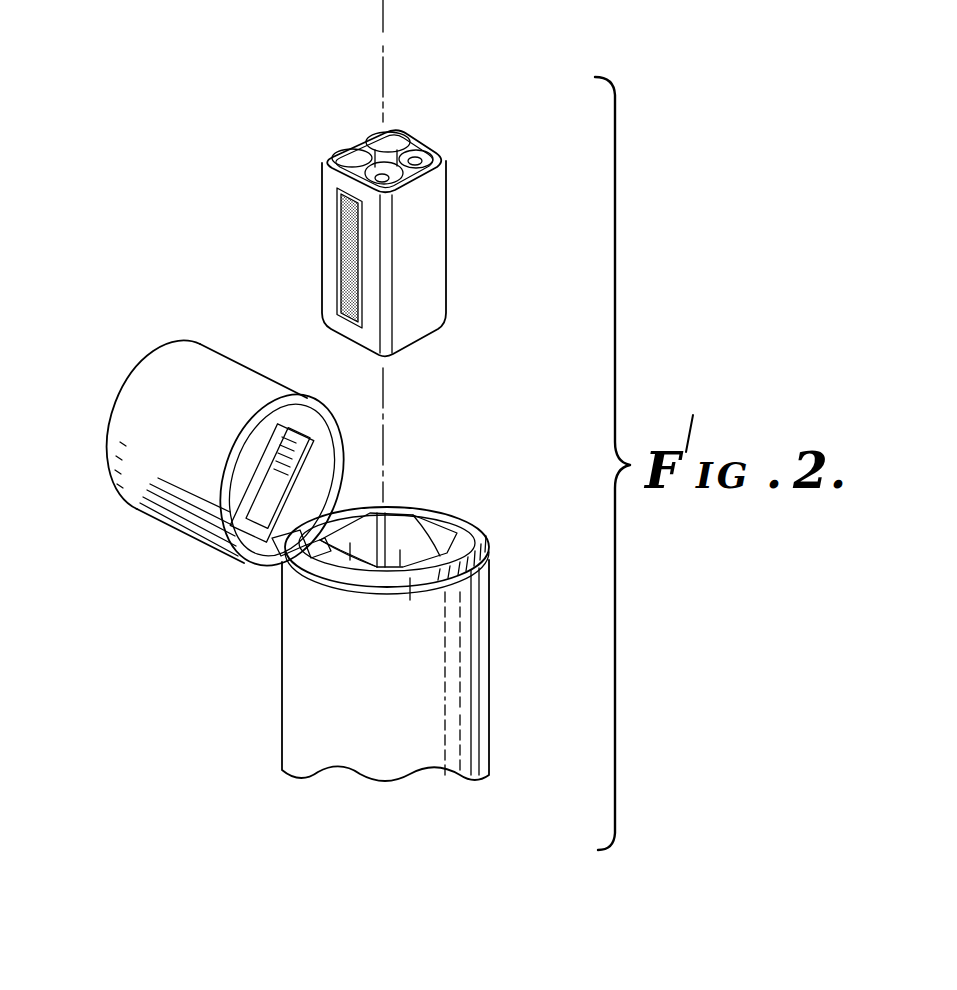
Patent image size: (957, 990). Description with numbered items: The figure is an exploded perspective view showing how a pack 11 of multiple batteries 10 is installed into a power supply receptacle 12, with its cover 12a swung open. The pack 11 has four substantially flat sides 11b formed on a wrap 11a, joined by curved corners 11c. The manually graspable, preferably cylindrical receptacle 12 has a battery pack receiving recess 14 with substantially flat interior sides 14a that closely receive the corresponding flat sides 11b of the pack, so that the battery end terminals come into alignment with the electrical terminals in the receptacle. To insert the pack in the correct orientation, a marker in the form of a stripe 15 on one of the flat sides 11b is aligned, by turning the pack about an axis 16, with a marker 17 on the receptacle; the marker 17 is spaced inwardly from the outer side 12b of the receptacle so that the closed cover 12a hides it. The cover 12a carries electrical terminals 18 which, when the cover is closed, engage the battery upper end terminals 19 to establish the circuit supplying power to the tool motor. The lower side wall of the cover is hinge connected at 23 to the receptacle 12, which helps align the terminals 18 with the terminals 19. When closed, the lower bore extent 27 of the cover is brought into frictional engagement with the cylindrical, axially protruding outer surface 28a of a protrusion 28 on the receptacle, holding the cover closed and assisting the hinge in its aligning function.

The batteries 10 is at (417, 157).
The pack 11 is at (318, 203).
The wrap 11a is at (447, 186).
The flat sides 11b is at (430, 263).
The curved corners 11c is at (322, 246).
The power supply receptacle 12 is at (272, 753).
The cover 12a is at (156, 514).
The outer side 12b is at (432, 611).
The battery pack receiving recess 14 is at (410, 518).
The flat interior sides 14a is at (400, 552).
The stripe 15 is at (340, 277).
The axis 16 is at (383, 30).
The marker 17 is at (293, 562).
The electrical terminals 18 is at (280, 464).
The battery upper end terminals 19 is at (345, 150).
The hinge connection 23 is at (277, 555).
The lower bore extent 27 is at (340, 447).
The protrusion 28 is at (455, 538).
The outer surface 28a is at (410, 582).